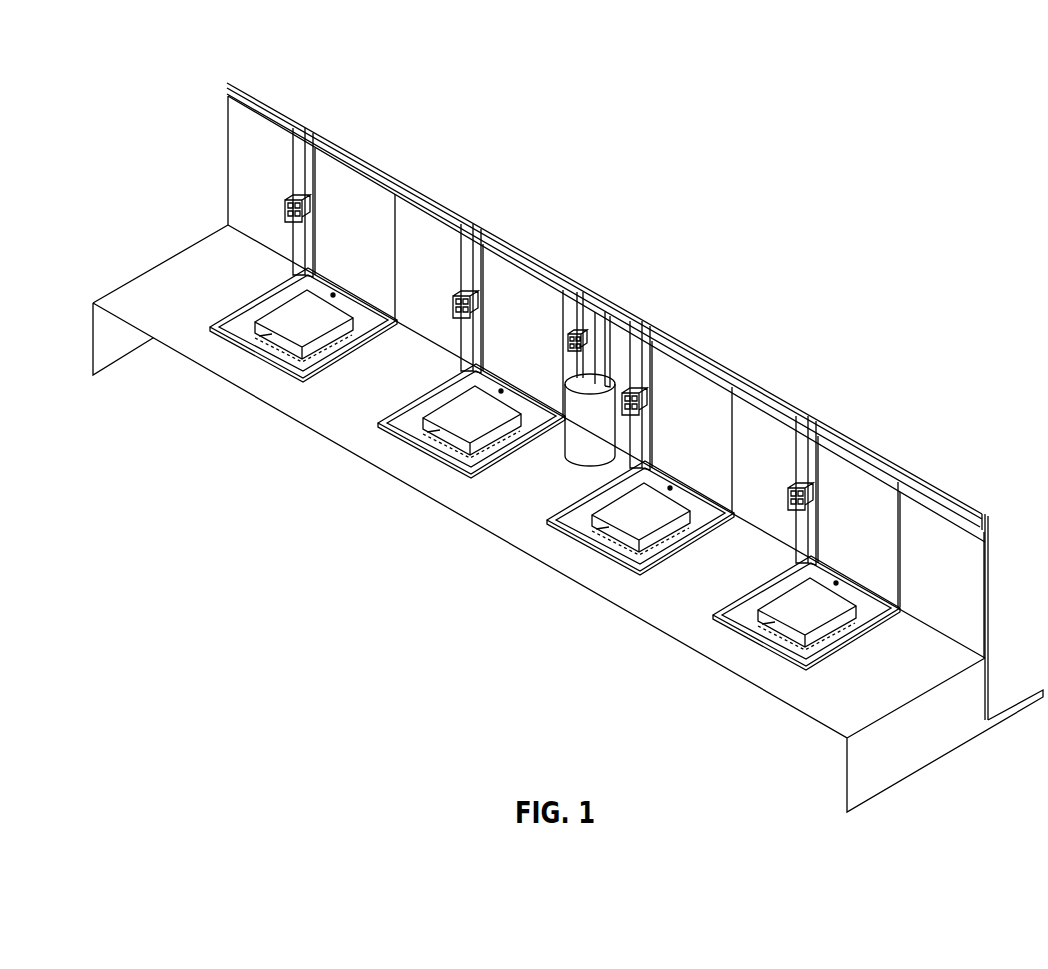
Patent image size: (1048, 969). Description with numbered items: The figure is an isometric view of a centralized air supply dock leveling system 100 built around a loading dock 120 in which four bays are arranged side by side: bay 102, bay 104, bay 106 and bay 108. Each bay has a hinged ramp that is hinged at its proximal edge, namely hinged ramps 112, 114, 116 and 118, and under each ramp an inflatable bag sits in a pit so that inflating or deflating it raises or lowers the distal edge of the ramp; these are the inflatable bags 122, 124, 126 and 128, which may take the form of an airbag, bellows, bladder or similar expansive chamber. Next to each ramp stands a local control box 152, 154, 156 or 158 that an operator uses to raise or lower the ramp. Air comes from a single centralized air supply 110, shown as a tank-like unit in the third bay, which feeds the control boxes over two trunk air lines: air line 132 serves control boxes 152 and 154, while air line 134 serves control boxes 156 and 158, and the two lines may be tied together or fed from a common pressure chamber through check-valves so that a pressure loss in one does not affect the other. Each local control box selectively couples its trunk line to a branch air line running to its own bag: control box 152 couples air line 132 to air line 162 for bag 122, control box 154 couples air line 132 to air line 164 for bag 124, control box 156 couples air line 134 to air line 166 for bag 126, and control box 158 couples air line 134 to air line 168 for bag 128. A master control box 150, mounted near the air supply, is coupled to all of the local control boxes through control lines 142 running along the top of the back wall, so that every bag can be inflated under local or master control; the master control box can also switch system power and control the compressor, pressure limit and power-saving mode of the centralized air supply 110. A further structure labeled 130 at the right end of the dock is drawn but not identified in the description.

The dock leveling system 100 is at (902, 146).
The bay 102 is at (468, 187).
The bay 104 is at (624, 267).
The bay 106 is at (779, 344).
The bay 108 is at (933, 437).
The centralized air supply 110 is at (566, 440).
The hinged ramp 112 is at (336, 272).
The hinged ramp 114 is at (471, 401).
The hinged ramp 116 is at (640, 500).
The hinged ramp 118 is at (806, 599).
The loading dock 120 is at (832, 708).
The inflatable bag 122 is at (287, 333).
The inflatable bag 124 is at (472, 422).
The inflatable bag 126 is at (641, 519).
The inflatable bag 128 is at (807, 614).
The end wall 130 is at (989, 595).
The air line 132 is at (226, 95).
The air line 134 is at (905, 496).
The control lines 142 is at (228, 83).
The master control box 150 is at (566, 345).
The local control box 152 is at (311, 213).
The local control box 154 is at (495, 304).
The local control box 156 is at (664, 397).
The local control box 158 is at (831, 493).
The air line 162 is at (296, 269).
The air line 164 is at (439, 305).
The air line 166 is at (608, 403).
The air line 168 is at (775, 499).